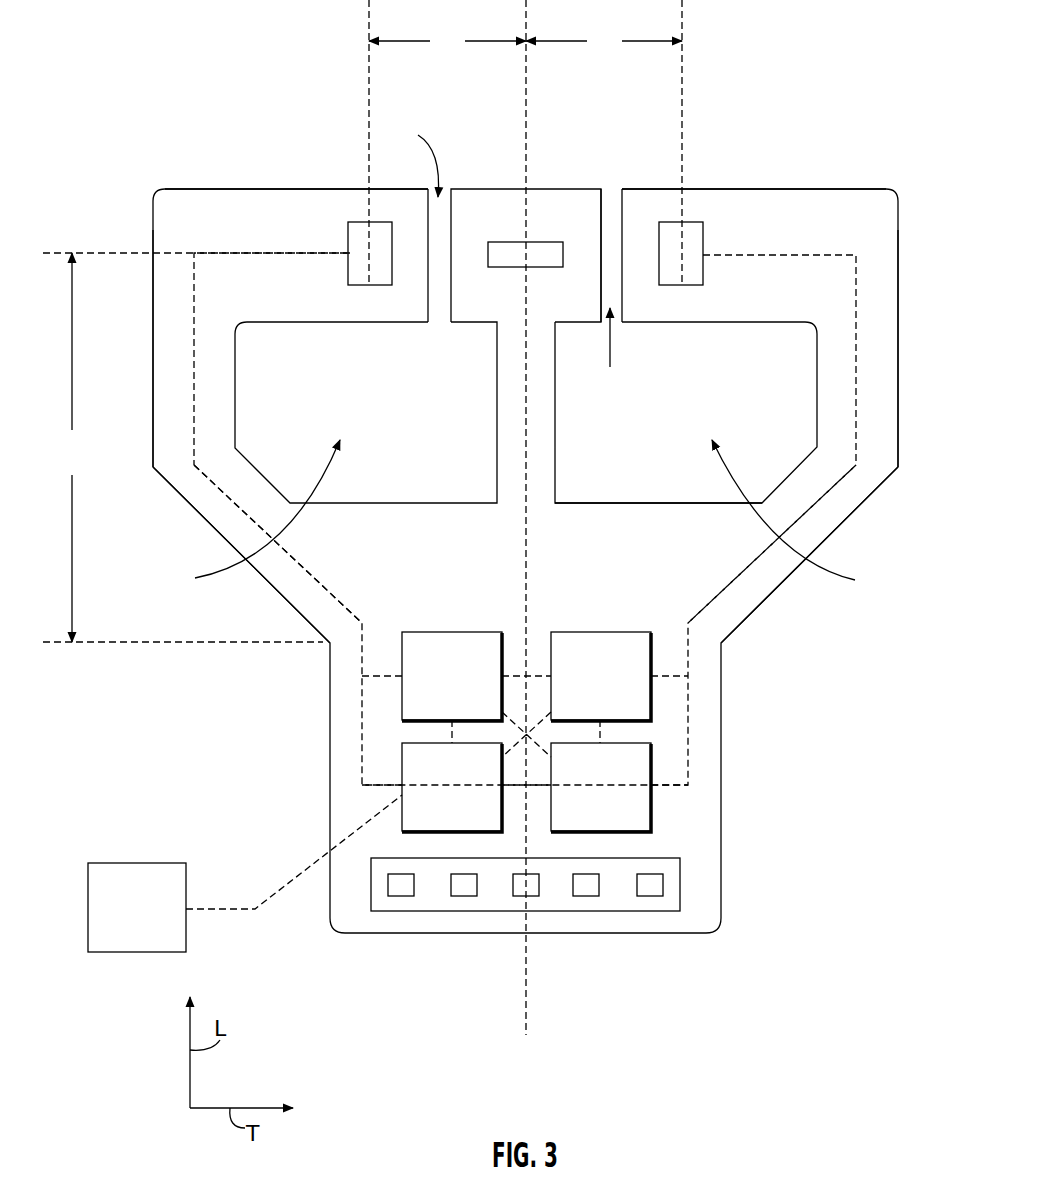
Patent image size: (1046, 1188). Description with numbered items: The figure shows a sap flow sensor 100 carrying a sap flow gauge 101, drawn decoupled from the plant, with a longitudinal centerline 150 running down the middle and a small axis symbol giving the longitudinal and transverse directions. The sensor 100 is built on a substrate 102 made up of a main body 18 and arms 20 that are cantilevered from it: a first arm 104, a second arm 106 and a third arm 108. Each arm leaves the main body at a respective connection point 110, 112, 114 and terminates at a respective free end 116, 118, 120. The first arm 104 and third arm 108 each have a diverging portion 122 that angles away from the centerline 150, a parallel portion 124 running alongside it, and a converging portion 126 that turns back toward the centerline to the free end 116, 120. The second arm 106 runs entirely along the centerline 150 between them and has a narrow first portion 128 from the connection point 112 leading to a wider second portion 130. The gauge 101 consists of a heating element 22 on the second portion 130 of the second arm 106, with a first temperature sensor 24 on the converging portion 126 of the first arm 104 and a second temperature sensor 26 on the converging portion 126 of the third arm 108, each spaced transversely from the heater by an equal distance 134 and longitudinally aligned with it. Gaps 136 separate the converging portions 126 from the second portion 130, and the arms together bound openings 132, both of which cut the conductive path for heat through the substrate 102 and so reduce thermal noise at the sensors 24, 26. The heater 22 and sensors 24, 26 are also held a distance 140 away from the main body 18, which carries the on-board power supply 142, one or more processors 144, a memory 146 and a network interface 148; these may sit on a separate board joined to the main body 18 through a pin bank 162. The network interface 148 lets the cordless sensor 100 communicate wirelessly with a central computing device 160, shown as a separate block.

The sap flow sensor 100 is at (158, 112).
The sap flow gauge 101 is at (894, 110).
The substrate 102 is at (688, 750).
The first arm 104 is at (187, 372).
The second arm 106 is at (497, 447).
The third arm 108 is at (862, 372).
The connection point 110 is at (325, 645).
The connection point 112 is at (569, 503).
The connection point 114 is at (722, 643).
The free end 116 is at (428, 305).
The free end 118 is at (485, 189).
The free end 120 is at (623, 305).
The diverging portion 122 is at (227, 503).
The parallel portion 124 is at (177, 420).
The converging portion 126 is at (277, 210).
The first portion 128 is at (555, 445).
The second portion 130 is at (583, 200).
The openings 132 is at (524, 519).
The distance 134 is at (525, 142).
The gap 136 is at (504, 260).
The distance 140 is at (196, 447).
The on-board power supply 142 is at (617, 800).
The processors 144 is at (617, 691).
The memory 146 is at (468, 691).
The network interface 148 is at (468, 800).
The longitudinal centerline 150 is at (526, 983).
The central computing device 160 is at (150, 923).
The pin bank 162 is at (680, 883).
The main body 18 is at (380, 787).
The arms 20 is at (521, 378).
The heating element 22 is at (547, 242).
The first temperature sensor 24 is at (357, 286).
The second temperature sensor 26 is at (695, 222).